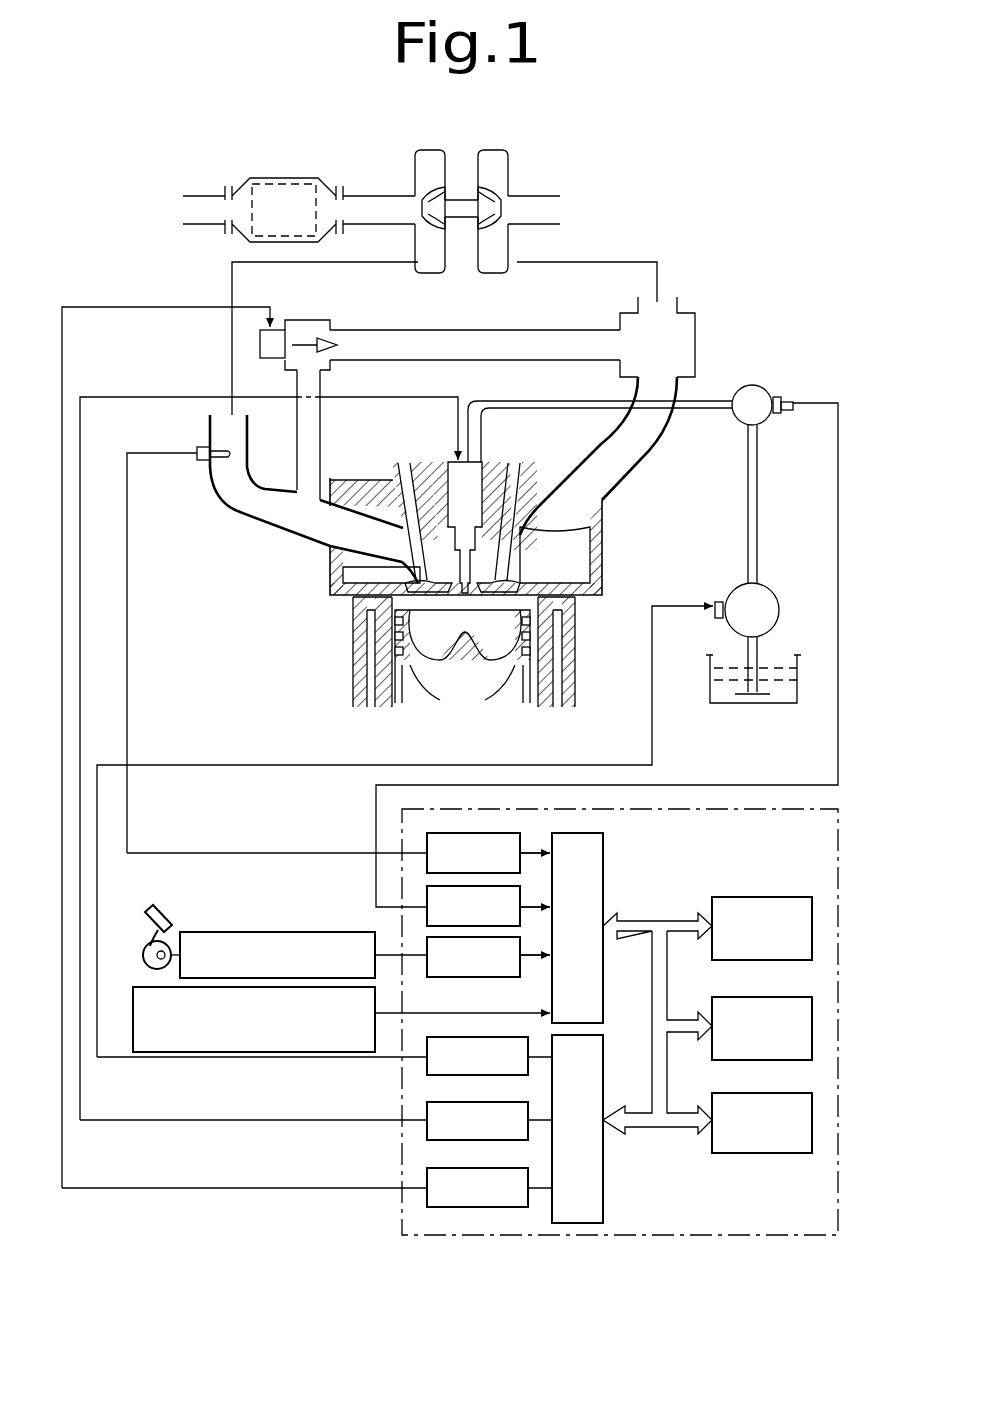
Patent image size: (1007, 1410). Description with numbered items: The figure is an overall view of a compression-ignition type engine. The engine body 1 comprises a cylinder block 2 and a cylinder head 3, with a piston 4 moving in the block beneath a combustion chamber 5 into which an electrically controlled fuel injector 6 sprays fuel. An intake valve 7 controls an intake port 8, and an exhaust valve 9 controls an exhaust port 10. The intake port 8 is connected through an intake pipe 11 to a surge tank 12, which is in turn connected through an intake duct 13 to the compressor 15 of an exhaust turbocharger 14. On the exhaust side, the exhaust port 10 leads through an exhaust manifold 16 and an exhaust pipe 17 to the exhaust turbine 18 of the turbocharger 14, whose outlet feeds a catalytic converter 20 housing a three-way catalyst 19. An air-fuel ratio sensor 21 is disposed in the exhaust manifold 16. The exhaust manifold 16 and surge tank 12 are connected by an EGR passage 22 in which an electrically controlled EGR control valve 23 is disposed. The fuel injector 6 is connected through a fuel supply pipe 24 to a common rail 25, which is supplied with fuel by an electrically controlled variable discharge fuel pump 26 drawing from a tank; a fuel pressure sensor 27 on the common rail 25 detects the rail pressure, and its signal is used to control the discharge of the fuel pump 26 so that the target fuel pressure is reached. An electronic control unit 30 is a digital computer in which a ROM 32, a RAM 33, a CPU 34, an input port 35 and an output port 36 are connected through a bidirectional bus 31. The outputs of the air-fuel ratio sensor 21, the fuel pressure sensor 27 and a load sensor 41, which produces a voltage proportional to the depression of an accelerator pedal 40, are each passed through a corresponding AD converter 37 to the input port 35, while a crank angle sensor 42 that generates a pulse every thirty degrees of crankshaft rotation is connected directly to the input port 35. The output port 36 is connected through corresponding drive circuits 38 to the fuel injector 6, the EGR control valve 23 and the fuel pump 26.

The engine body 1 is at (469, 565).
The cylinder block 2 is at (580, 650).
The cylinder head 3 is at (605, 508).
The piston 4 is at (498, 640).
The combustion chamber 5 is at (426, 640).
The electrically controlled fuel injector 6 is at (448, 462).
The intake valve 7 is at (606, 576).
The intake port 8 is at (537, 478).
The exhaust valve 9 is at (333, 583).
The exhaust port 10 is at (347, 537).
The intake pipe 11 is at (655, 452).
The surge tank 12 is at (695, 333).
The intake duct 13 is at (612, 260).
The exhaust turbocharger 14 is at (499, 225).
The compressor 15 is at (495, 273).
The exhaust manifold 16 is at (243, 510).
The exhaust pipe 17 is at (232, 272).
The exhaust turbine 18 is at (428, 273).
The three-way catalyst 19 is at (298, 180).
The catalytic converter 20 is at (262, 178).
The air-fuel ratio sensor 21 is at (203, 461).
The EGR passage 22 is at (352, 350).
The EGR control valve 23 is at (318, 305).
The fuel supply pipe 24 is at (536, 408).
The common rail 25 is at (760, 387).
The variable discharge fuel pump 26 is at (777, 588).
The fuel pressure sensor 27 is at (783, 414).
The electronic control unit 30 is at (620, 1019).
The bidirectional bus 31 is at (660, 918).
The read only memory (ROM) 32 is at (756, 897).
The random access memory (RAM) 33 is at (762, 997).
The microprocessor (CPU) 34 is at (757, 1093).
The input port 35 is at (605, 863).
The output port 36 is at (605, 1178).
The AD converter 37 is at (427, 955).
The drive circuit 38 is at (427, 1188).
The accelerator pedal 40 is at (148, 938).
The load sensor 41 is at (252, 932).
The crank angle sensor 42 is at (133, 1010).